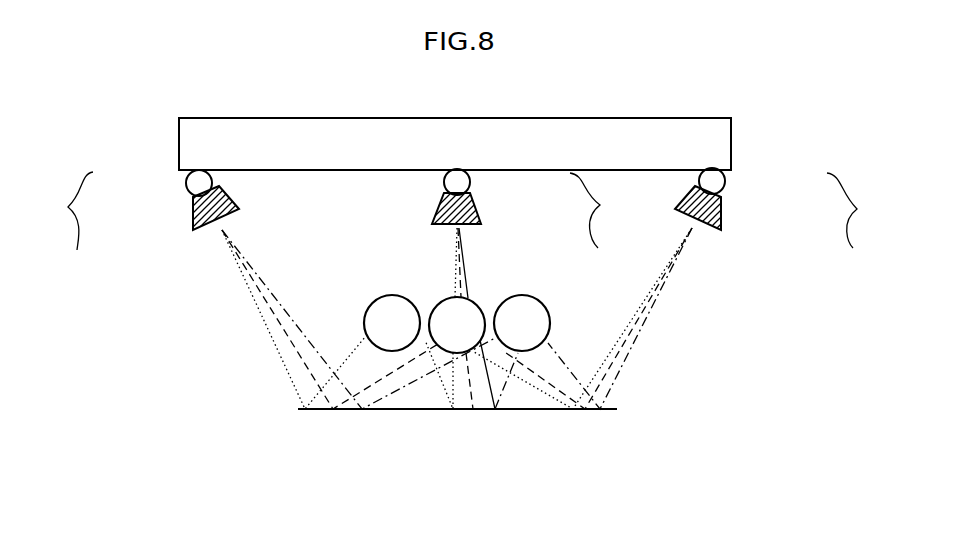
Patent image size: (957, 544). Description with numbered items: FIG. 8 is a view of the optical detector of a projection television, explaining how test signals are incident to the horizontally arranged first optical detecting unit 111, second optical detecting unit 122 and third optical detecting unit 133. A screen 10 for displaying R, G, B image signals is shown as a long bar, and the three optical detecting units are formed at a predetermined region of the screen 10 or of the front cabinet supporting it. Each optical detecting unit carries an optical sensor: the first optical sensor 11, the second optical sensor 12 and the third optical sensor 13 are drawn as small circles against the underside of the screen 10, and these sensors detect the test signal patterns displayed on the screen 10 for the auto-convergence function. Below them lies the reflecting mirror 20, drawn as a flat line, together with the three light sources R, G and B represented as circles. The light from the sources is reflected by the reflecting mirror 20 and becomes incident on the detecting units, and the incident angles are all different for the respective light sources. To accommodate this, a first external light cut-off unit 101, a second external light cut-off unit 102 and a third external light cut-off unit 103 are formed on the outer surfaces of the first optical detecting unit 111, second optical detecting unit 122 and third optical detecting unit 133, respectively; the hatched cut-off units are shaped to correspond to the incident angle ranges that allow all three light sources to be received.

The screen 10 is at (615, 118).
The first optical sensor 11 is at (713, 181).
The second optical sensor 12 is at (459, 182).
The third optical sensor 13 is at (200, 182).
The first external light cut-off unit 101 is at (722, 212).
The second external light cut-off unit 102 is at (480, 206).
The third external light cut-off unit 103 is at (193, 214).
The first optical detecting unit 111 is at (861, 210).
The second optical detecting unit 122 is at (606, 210).
The third optical detecting unit 133 is at (61, 211).
The reflecting mirror 20 is at (530, 410).